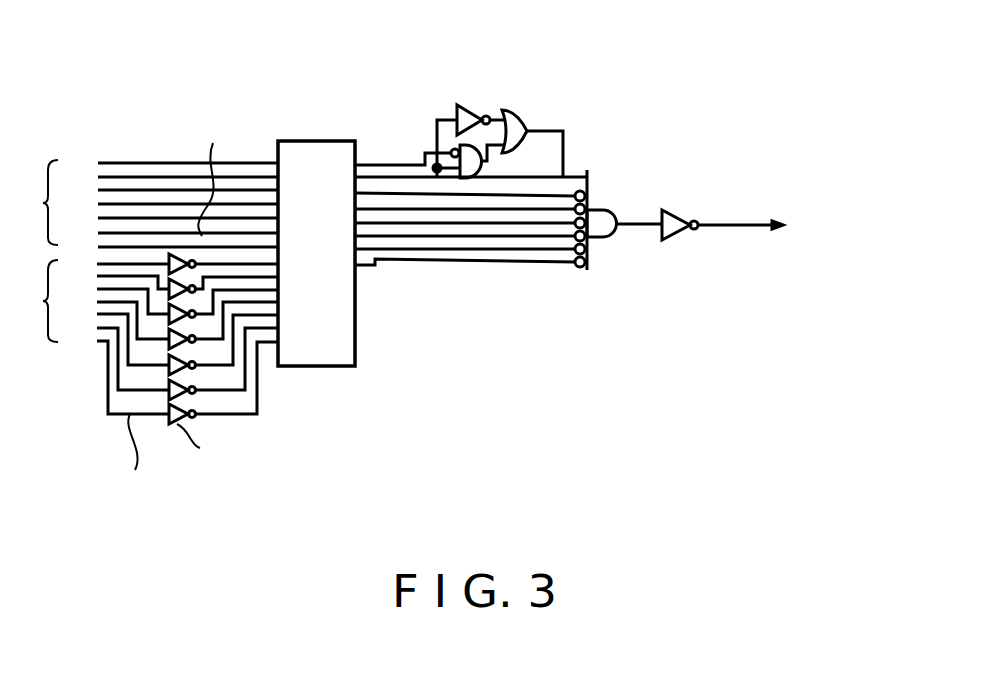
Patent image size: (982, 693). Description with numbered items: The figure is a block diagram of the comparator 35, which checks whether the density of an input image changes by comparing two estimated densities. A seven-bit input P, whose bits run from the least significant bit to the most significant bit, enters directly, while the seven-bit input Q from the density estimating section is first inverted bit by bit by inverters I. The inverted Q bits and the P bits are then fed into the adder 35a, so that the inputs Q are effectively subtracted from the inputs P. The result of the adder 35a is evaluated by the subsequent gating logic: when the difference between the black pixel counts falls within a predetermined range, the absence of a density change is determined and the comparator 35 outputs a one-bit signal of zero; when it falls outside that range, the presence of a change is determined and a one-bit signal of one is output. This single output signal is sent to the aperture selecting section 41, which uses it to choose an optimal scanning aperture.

The comparator 35 is at (447, 296).
The adder 35a is at (355, 318).
The aperture selecting section 41 is at (785, 196).